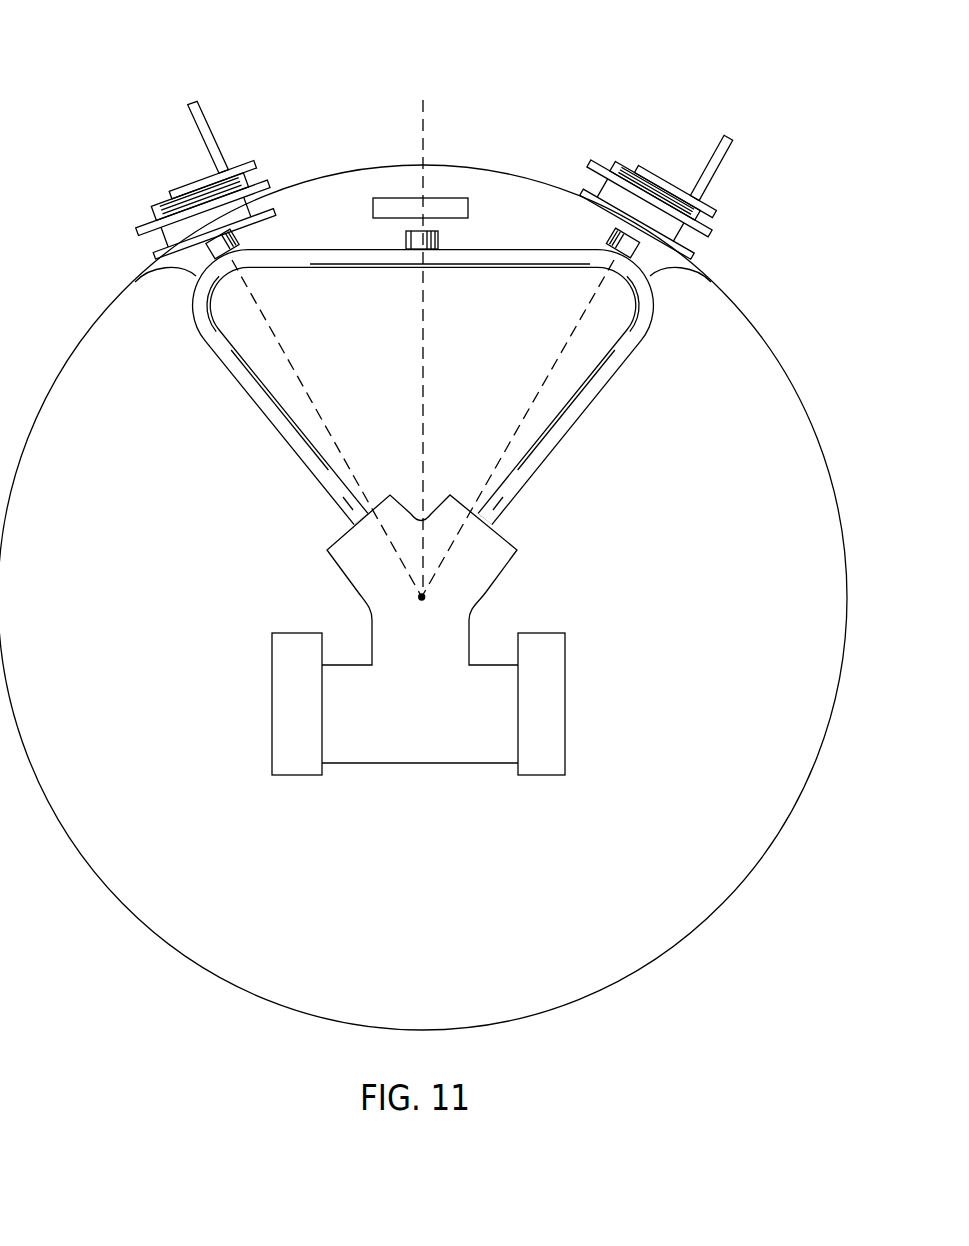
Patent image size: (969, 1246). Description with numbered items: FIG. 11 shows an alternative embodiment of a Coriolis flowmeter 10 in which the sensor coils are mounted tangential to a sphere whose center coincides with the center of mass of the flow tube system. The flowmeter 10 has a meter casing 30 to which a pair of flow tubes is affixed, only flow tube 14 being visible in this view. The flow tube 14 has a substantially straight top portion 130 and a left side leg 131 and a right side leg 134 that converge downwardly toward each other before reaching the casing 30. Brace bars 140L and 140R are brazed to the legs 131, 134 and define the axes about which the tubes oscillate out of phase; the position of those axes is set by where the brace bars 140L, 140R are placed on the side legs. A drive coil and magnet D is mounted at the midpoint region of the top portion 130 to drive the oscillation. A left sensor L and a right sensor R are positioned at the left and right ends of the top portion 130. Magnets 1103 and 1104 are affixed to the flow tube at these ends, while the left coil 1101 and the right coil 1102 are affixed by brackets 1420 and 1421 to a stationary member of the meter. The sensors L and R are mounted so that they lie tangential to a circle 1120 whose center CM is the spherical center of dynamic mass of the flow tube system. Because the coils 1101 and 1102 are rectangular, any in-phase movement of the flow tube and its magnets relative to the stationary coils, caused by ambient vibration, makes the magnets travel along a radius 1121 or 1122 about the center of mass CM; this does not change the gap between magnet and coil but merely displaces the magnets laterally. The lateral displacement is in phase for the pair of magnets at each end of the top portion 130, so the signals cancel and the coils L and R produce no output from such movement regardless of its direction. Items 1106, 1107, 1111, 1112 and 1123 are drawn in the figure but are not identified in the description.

The flowmeter 10 is at (180, 684).
The flow tube 14 is at (628, 382).
The meter casing 30 is at (415, 764).
The top portion of flow tube 130 is at (378, 266).
The left side leg 131 is at (270, 422).
The right side leg 134 is at (583, 420).
The left brace bar 140L is at (325, 493).
The right brace bar 140R is at (527, 487).
The left coil 1101 is at (152, 232).
The right coil 1102 is at (709, 212).
The magnet 1103 is at (240, 234).
The magnet 1104 is at (707, 293).
The center plate 1106 is at (400, 197).
The center block 1107 is at (445, 241).
The left mount 1111 is at (127, 285).
The right corner block 1112 is at (660, 300).
The circle 1120 is at (235, 980).
The radius 1121 is at (300, 377).
The radius 1122 is at (553, 369).
The center axis line 1123 is at (430, 322).
The bracket 1420 is at (205, 112).
The bracket 1421 is at (718, 138).
The left sensor L is at (161, 146).
The right sensor R is at (692, 164).
The drive coil and magnet D is at (438, 196).
The center of mass CM is at (422, 600).